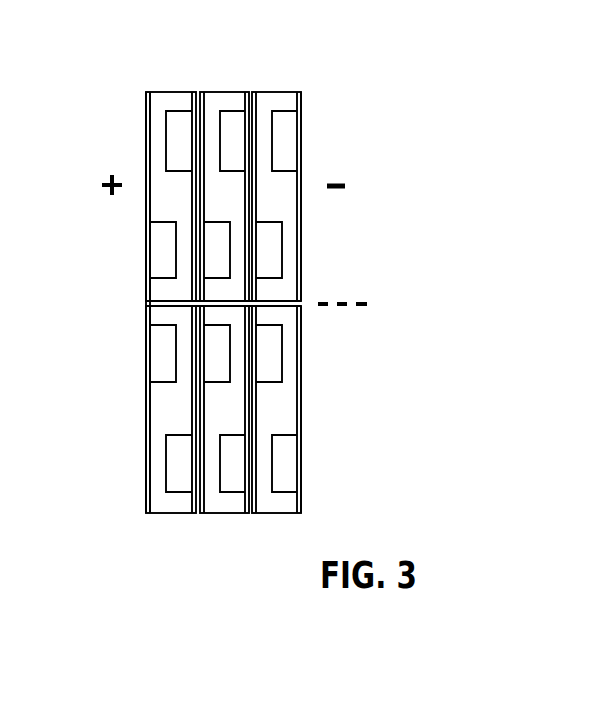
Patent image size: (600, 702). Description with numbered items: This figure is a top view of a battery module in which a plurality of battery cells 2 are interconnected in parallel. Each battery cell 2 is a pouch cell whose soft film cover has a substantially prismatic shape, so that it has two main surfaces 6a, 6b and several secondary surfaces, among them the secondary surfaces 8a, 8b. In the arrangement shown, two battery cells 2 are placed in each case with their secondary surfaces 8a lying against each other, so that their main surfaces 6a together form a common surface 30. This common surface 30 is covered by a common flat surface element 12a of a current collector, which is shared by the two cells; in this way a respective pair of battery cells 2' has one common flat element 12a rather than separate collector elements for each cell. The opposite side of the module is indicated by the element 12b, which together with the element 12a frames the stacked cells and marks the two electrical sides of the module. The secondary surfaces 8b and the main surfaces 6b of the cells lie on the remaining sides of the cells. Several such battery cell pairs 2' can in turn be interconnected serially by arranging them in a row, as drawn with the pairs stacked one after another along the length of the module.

The battery cell 2 is at (223, 452).
The pair of battery cells 2' is at (223, 154).
The main surface 6a is at (144, 392).
The main surface 6b is at (304, 345).
The secondary surface 8a is at (160, 91).
The secondary surface 8b is at (158, 420).
The common flat element of the current collector 12a is at (146, 140).
The busbar 12b is at (302, 140).
The common surface 30 is at (146, 302).